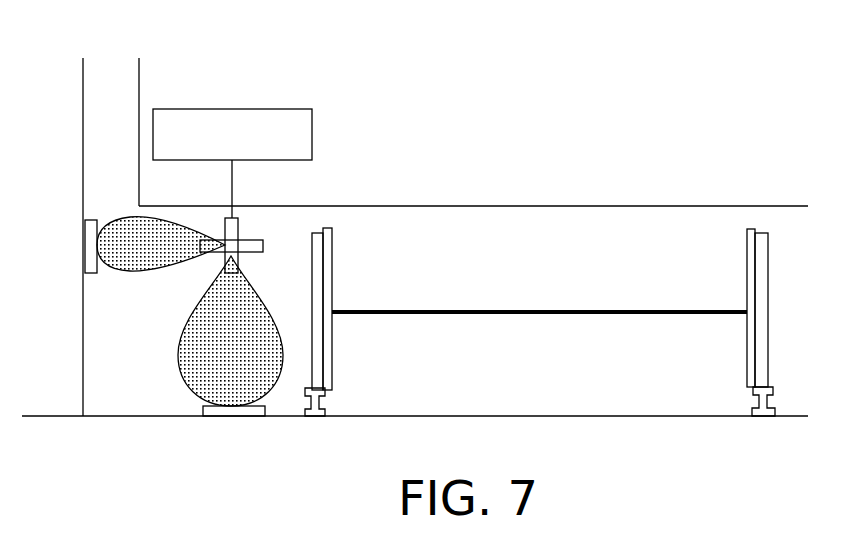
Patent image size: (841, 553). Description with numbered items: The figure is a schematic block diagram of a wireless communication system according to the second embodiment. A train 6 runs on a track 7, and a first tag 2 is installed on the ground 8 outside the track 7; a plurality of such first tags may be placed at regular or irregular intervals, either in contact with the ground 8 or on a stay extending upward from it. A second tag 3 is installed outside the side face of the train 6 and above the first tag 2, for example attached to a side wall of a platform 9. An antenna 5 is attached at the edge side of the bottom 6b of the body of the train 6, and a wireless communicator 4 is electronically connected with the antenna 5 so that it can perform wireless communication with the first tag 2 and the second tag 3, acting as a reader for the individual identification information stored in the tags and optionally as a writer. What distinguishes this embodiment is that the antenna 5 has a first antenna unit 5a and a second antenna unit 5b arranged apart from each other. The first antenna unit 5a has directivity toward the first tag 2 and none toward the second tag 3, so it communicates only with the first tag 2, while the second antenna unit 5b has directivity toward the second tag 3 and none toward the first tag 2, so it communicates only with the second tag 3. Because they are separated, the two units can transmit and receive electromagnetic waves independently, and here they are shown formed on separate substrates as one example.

The first tag 2 is at (214, 411).
The second tag 3 is at (88, 238).
The wireless communicator 4 is at (313, 134).
The antenna 5 is at (200, 288).
The first antenna unit 5a is at (223, 255).
The second antenna unit 5b is at (213, 227).
The train 6 is at (157, 98).
The bottom 6b is at (495, 207).
The track 7 is at (330, 403).
The ground 8 is at (198, 418).
The platform 9 is at (77, 163).